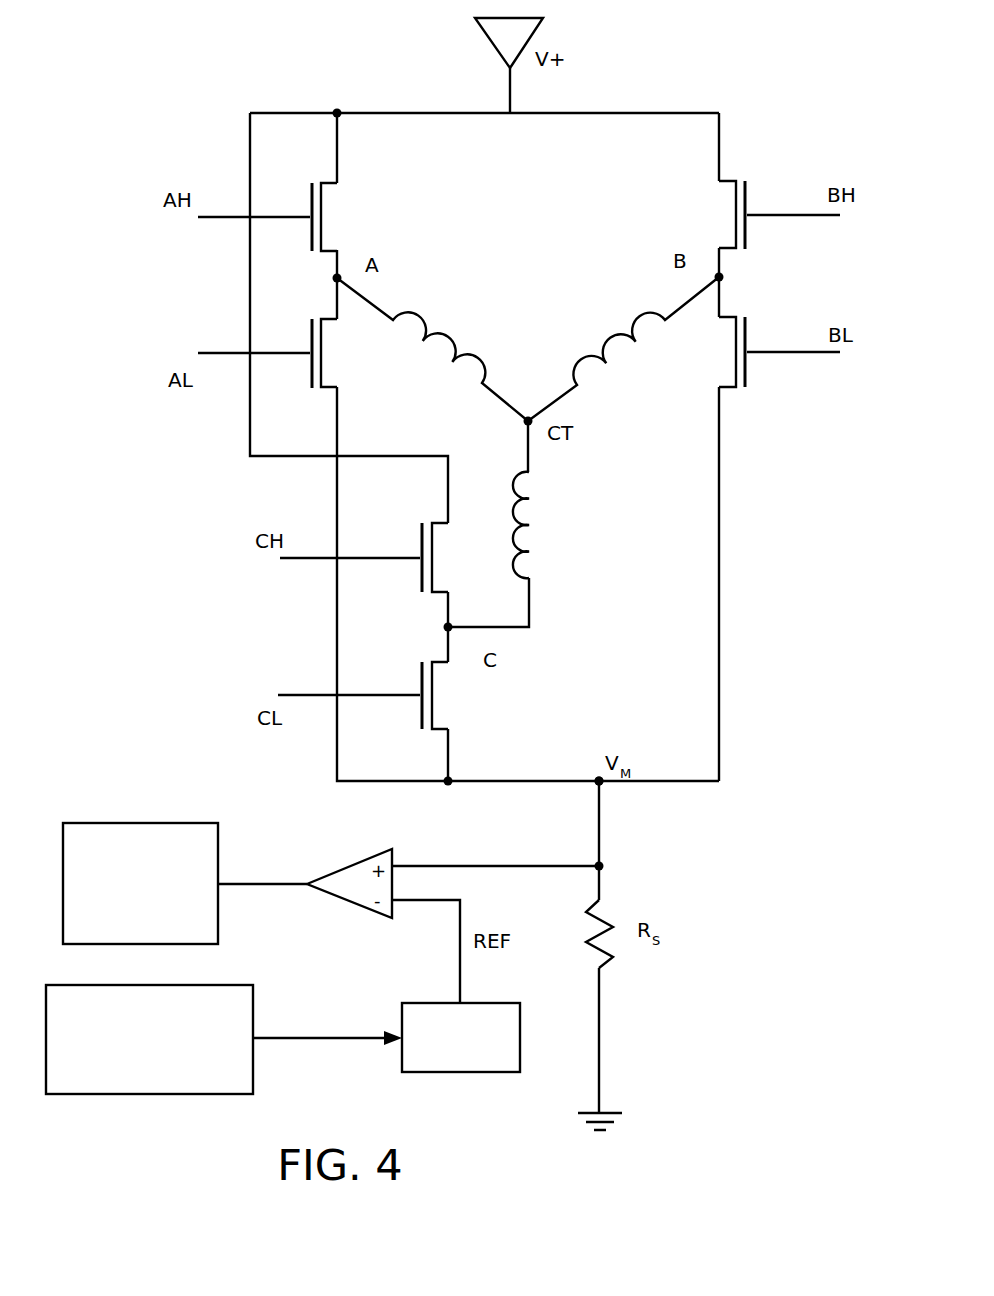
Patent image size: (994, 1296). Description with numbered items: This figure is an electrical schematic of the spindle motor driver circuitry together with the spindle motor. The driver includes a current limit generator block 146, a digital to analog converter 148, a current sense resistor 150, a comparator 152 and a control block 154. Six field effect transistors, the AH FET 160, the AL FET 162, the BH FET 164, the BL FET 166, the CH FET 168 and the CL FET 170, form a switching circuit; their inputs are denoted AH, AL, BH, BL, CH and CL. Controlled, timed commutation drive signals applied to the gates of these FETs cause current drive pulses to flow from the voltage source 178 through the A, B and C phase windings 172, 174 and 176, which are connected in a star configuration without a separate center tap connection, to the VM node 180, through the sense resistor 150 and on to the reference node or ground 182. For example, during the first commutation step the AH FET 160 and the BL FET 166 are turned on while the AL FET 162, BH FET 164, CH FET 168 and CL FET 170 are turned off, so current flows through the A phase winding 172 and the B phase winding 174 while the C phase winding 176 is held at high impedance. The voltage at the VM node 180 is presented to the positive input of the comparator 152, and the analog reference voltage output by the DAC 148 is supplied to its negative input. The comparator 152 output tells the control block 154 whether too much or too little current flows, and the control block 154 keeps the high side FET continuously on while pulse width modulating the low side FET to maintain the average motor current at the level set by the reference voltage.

The current limit generator block 146 is at (167, 1094).
The digital to analog converter (DAC) 148 is at (445, 1072).
The current sense resistor 150 is at (607, 952).
The comparator 152 is at (345, 902).
The control block 154 is at (157, 823).
The AH FET 160 is at (320, 208).
The AL FET 162 is at (322, 365).
The BH FET 164 is at (735, 192).
The BL FET 166 is at (733, 368).
The CH FET 168 is at (432, 540).
The CL FET 170 is at (432, 712).
The A phase winding 172 is at (435, 328).
The B phase winding 174 is at (643, 345).
The C phase winding 176 is at (530, 512).
The voltage source 178 is at (497, 50).
The VM node 180 is at (612, 792).
The reference node (ground) 182 is at (618, 1112).